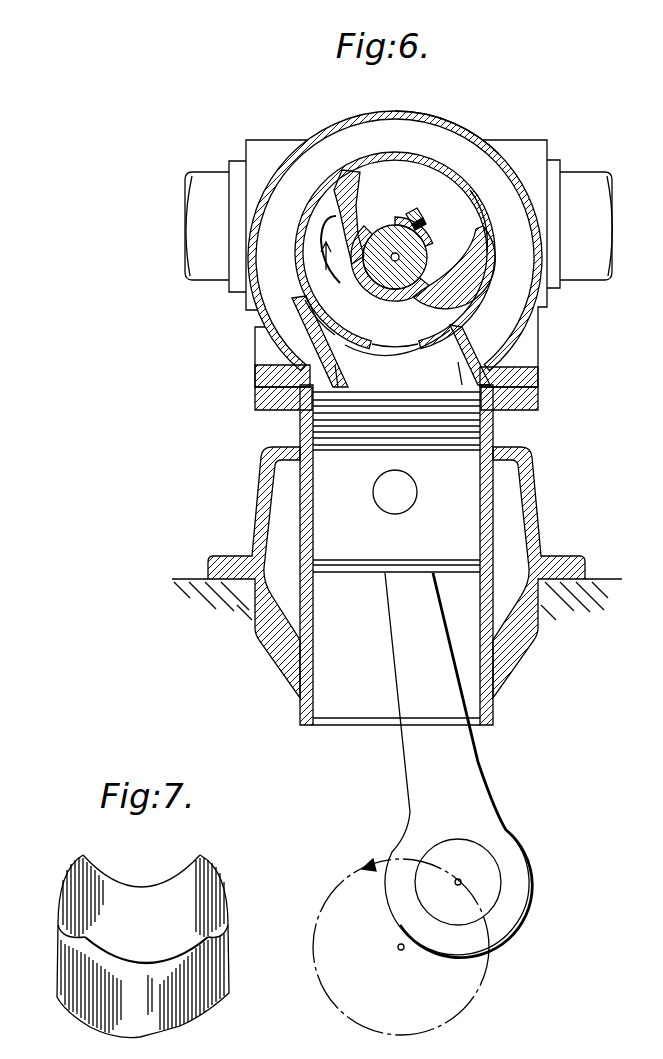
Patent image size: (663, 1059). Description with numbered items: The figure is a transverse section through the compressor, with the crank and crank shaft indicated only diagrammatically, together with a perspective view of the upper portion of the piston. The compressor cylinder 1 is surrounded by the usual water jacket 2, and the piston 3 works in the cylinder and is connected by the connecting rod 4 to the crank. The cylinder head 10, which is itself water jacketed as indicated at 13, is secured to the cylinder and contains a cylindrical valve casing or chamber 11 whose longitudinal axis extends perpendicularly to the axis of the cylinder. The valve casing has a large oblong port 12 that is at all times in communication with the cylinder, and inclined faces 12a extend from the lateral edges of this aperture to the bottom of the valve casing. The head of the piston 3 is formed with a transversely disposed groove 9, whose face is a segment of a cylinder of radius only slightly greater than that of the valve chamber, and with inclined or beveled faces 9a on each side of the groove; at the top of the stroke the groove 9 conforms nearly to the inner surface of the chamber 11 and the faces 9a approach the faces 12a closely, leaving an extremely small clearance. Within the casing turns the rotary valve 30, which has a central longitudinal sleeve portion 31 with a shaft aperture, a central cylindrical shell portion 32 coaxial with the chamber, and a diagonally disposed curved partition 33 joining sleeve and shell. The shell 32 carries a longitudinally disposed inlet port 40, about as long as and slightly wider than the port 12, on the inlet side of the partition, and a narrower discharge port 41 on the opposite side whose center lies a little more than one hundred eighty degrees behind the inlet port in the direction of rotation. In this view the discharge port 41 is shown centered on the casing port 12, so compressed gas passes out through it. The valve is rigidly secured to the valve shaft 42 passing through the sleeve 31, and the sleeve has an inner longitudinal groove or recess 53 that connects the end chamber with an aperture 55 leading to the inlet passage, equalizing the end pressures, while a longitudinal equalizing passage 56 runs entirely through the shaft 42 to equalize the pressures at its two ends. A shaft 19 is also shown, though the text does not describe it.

In FIG. 6, the compressor cylinder 1 is at (532, 492).
In FIG. 6, the water jacket 2 is at (524, 523).
In FIG. 6, the piston 3 is at (396, 482).
In FIG. 7, the piston 3 is at (203, 994).
In FIG. 6, the connecting rod 4 is at (466, 748).
In FIG. 6, the transversely disposed groove 9 is at (398, 366).
In FIG. 7, the transversely disposed groove 9 is at (147, 897).
In FIG. 6, the inclined or beveled faces 9a is at (333, 366).
In FIG. 7, the inclined or beveled faces 9a is at (75, 898).
In FIG. 6, the cylinder head 10 is at (352, 130).
In FIG. 6, the cylindrical valve casing or chamber 11 is at (456, 200).
In FIG. 6, the valve casing port 12 is at (444, 356).
In FIG. 6, the inclined faces 12a is at (343, 356).
In FIG. 6, the water jacket of cylinder head 13 is at (438, 136).
In FIG. 6, the shaft 19 is at (200, 186).
In FIG. 6, the rotary valve 30 is at (332, 184).
In FIG. 6, the central longitudinal sleeve portion 31 is at (387, 226).
In FIG. 6, the central cylindrical shell portion 32 is at (302, 322).
In FIG. 6, the partition 33 is at (454, 267).
In FIG. 6, the inlet port 40 is at (484, 236).
In FIG. 6, the discharge port 41 is at (398, 344).
In FIG. 6, the valve shaft 42 is at (390, 300).
In FIG. 6, the longitudinal groove or recess 53 is at (427, 222).
In FIG. 6, the aperture 55 is at (413, 210).
In FIG. 6, the longitudinal equalizing passage 56 is at (335, 258).